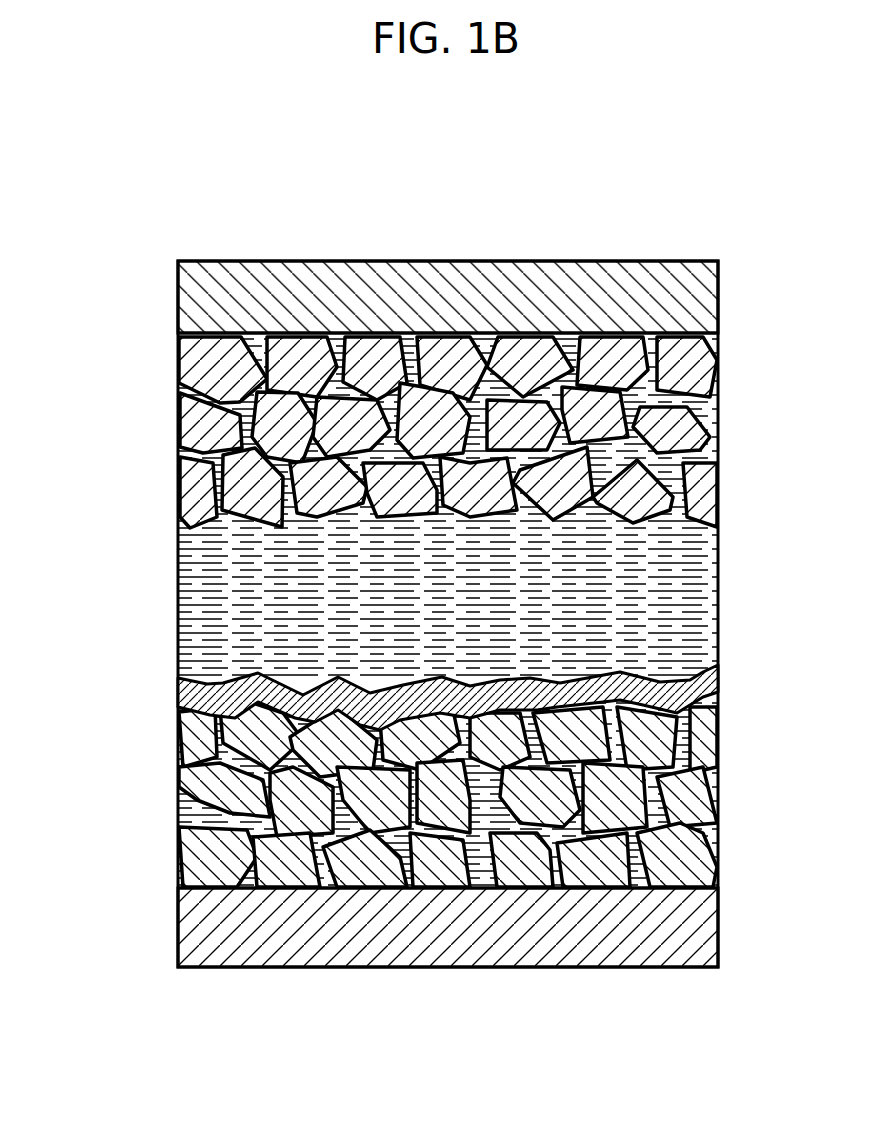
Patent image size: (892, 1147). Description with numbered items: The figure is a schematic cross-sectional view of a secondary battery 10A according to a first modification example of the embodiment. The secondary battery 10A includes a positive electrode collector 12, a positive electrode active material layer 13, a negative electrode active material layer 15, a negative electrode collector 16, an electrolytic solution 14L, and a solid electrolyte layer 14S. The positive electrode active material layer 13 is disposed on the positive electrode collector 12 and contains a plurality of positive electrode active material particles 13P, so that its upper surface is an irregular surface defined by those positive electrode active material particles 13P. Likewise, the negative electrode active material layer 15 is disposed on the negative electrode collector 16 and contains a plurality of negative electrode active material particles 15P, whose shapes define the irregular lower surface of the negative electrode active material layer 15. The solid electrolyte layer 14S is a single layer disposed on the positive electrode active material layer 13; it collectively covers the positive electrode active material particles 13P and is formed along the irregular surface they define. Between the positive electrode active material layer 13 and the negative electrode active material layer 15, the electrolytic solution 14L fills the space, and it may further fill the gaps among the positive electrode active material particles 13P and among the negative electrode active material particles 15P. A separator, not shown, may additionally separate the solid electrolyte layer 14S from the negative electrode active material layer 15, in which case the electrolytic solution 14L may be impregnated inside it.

The secondary battery 10A is at (721, 228).
The negative electrode collector 16 is at (688, 300).
The negative electrode active material layer 15 is at (433, 432).
The negative electrode active material particles 15P is at (190, 368).
The electrolytic solution 14L is at (688, 600).
The solid electrolyte layer 14S is at (688, 688).
The positive electrode active material layer 13 is at (433, 795).
The positive electrode active material particles 13P is at (190, 740).
The positive electrode collector 12 is at (688, 922).